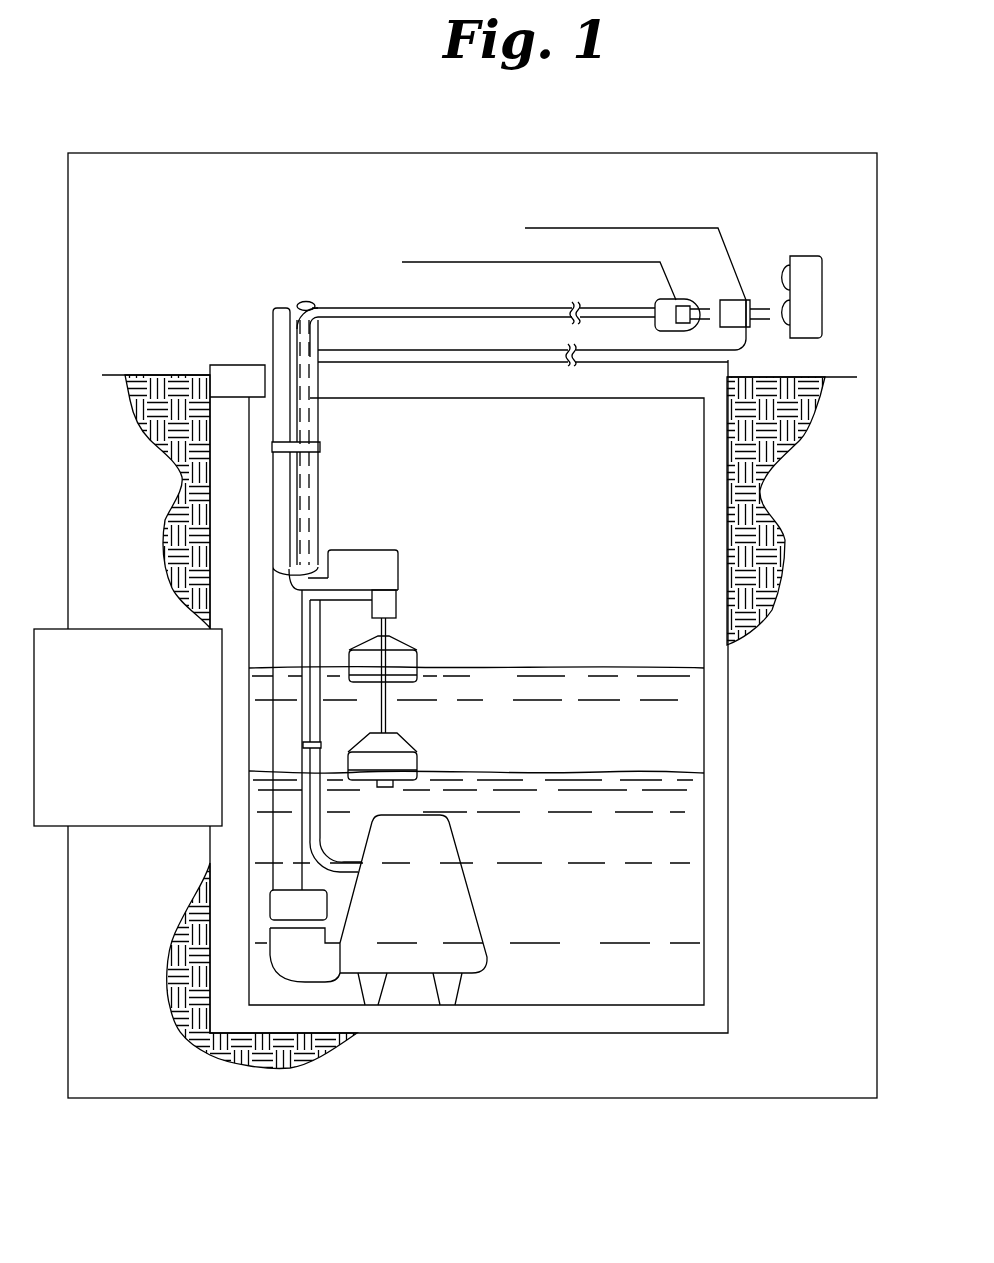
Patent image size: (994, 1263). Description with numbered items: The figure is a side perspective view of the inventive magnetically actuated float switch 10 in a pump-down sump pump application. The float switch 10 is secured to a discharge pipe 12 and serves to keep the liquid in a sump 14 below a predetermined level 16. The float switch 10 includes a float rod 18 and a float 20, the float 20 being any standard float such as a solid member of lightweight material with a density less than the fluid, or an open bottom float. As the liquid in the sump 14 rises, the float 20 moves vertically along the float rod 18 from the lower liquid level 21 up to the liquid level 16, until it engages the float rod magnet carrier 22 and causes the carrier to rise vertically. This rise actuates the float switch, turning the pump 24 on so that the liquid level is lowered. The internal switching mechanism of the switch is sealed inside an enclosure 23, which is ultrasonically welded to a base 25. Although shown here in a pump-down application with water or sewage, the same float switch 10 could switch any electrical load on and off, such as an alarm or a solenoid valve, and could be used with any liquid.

The magnetically actuated float switch 10 is at (417, 630).
The discharge pipe 12 is at (283, 316).
The sump 14 is at (723, 737).
The predetermined level 16 is at (563, 667).
The float rod 18 is at (388, 717).
The float 20 is at (418, 650).
The liquid level 21 is at (515, 772).
The float rod magnet carrier 22 is at (390, 630).
The enclosure 23 is at (358, 558).
The pump 24 is at (460, 922).
The base 25 is at (428, 584).